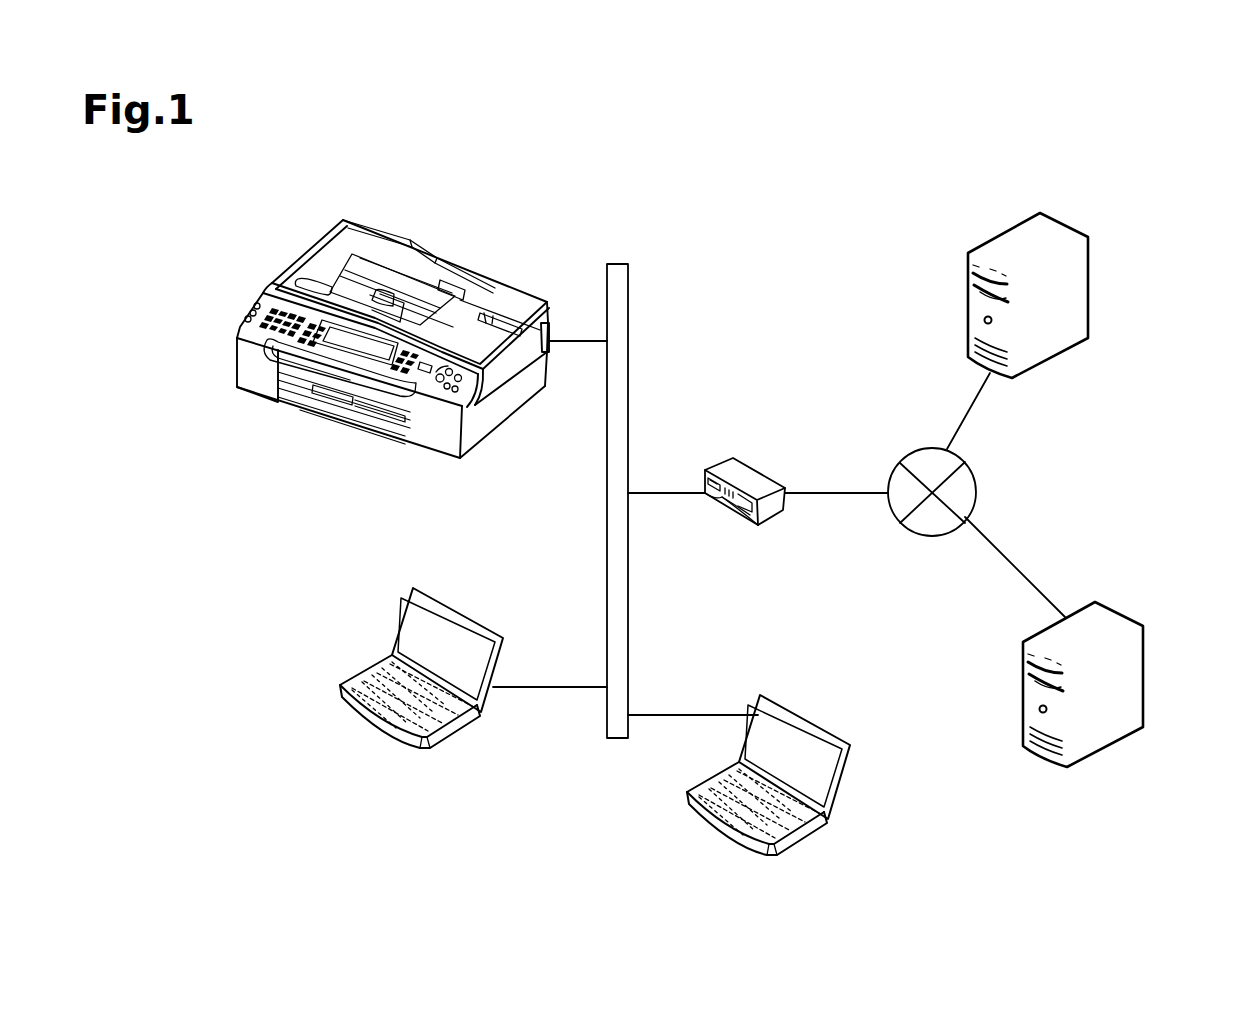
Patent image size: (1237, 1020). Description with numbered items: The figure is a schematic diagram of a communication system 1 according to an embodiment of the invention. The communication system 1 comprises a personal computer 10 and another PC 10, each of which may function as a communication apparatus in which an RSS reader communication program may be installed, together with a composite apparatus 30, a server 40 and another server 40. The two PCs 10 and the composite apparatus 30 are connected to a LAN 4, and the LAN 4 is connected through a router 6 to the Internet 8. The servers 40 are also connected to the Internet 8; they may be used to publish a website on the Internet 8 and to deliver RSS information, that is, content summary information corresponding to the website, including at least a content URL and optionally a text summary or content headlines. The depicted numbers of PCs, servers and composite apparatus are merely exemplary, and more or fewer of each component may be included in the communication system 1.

The communication system 1 is at (1172, 186).
The composite apparatus 30 is at (512, 303).
The LAN 4 is at (622, 290).
The router 6 is at (744, 472).
The Internet 8 is at (977, 485).
The server 40 is at (1087, 290).
The personal computer 10 is at (430, 615).